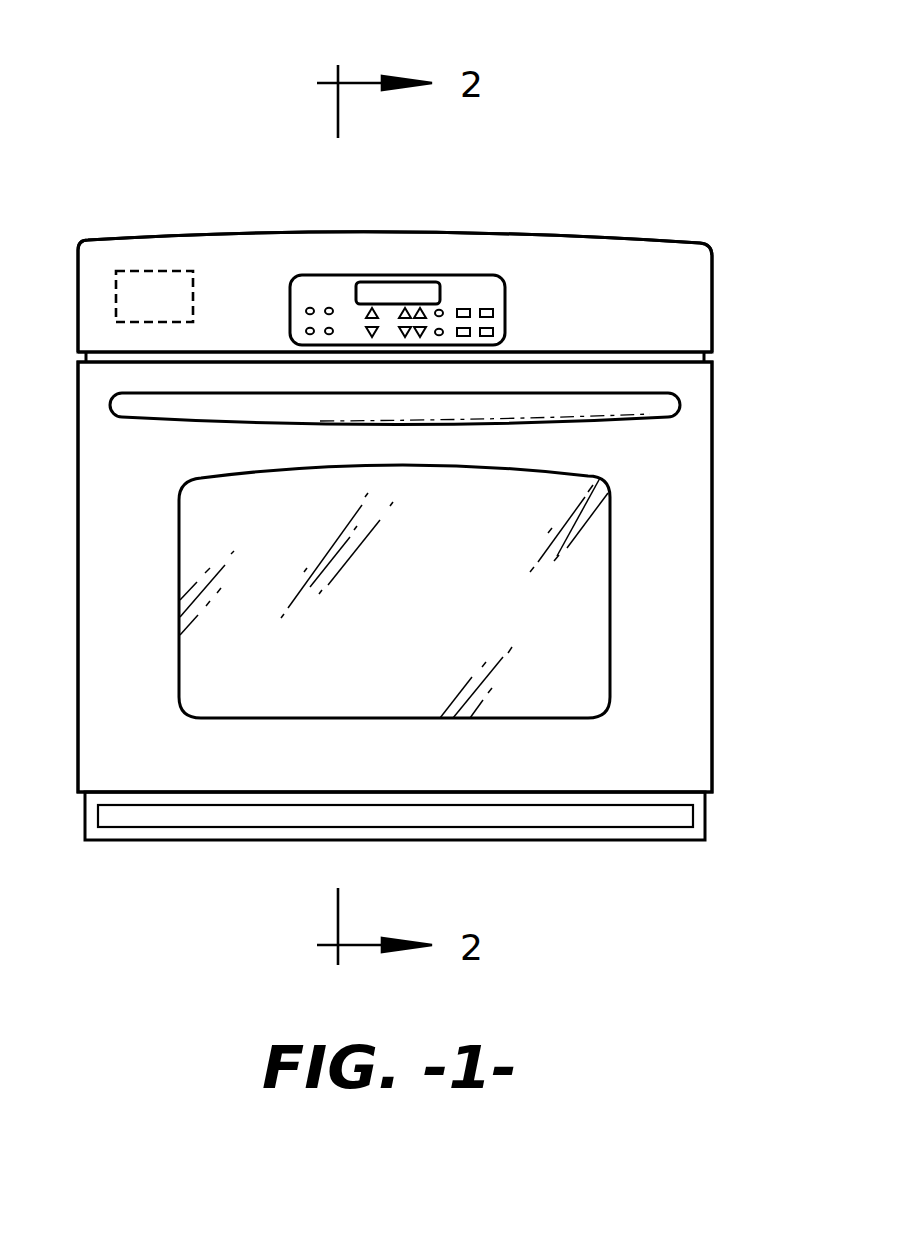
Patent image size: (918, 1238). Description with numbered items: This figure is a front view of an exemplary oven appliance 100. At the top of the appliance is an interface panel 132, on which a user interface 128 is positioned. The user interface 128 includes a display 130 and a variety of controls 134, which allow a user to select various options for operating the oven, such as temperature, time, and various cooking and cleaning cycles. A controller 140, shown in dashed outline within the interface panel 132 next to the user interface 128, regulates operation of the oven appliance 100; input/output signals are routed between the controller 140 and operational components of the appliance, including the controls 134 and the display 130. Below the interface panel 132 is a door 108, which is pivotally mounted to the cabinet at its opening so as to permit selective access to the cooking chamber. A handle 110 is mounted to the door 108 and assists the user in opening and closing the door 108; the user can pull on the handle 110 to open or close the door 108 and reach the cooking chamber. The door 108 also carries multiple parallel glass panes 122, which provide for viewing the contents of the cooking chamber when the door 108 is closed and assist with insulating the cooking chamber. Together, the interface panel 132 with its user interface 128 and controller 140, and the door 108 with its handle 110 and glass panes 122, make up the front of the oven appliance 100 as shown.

The oven appliance 100 is at (377, 421).
The door 108 is at (670, 517).
The handle 110 is at (657, 403).
The glass panes 122 is at (592, 610).
The user interface 128 is at (475, 292).
The display 130 is at (397, 293).
The interface panel 132 is at (635, 270).
The controls 134 is at (307, 310).
The controller 140 is at (148, 268).